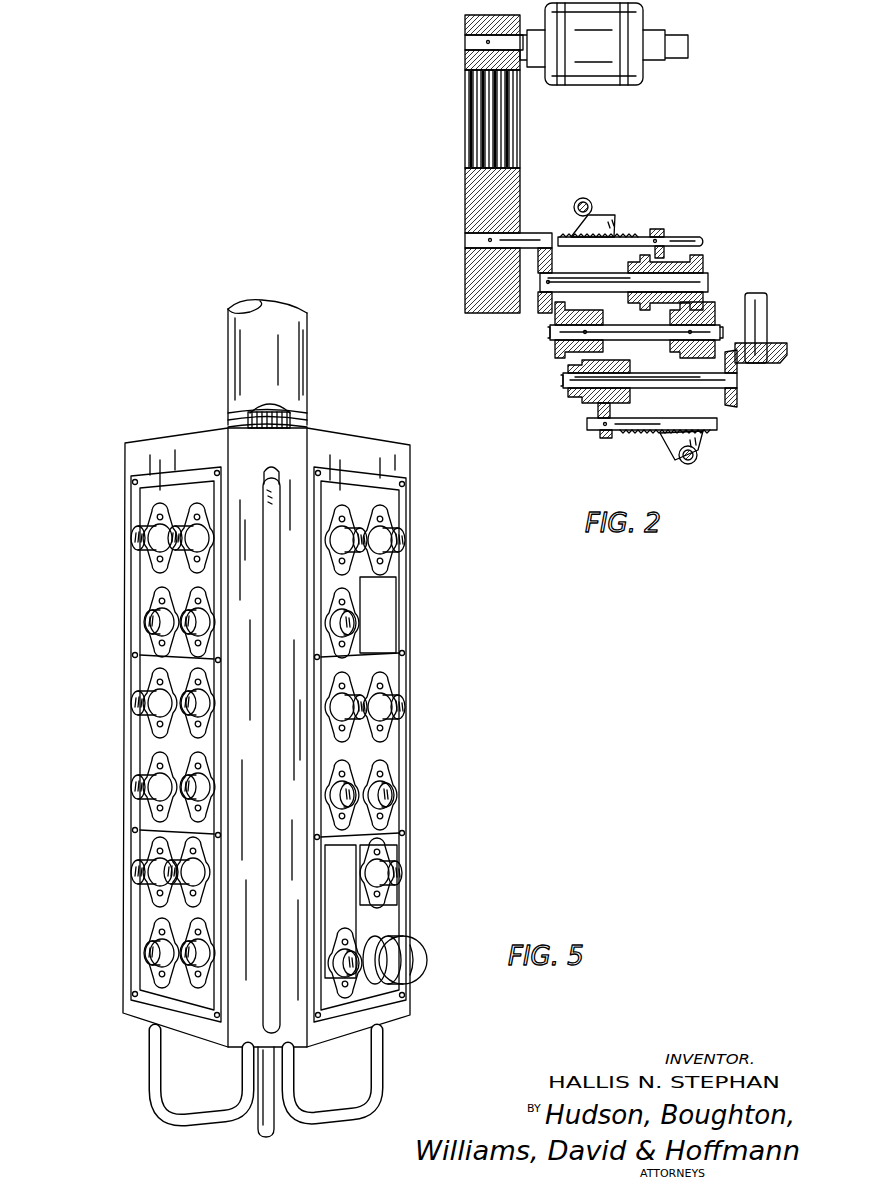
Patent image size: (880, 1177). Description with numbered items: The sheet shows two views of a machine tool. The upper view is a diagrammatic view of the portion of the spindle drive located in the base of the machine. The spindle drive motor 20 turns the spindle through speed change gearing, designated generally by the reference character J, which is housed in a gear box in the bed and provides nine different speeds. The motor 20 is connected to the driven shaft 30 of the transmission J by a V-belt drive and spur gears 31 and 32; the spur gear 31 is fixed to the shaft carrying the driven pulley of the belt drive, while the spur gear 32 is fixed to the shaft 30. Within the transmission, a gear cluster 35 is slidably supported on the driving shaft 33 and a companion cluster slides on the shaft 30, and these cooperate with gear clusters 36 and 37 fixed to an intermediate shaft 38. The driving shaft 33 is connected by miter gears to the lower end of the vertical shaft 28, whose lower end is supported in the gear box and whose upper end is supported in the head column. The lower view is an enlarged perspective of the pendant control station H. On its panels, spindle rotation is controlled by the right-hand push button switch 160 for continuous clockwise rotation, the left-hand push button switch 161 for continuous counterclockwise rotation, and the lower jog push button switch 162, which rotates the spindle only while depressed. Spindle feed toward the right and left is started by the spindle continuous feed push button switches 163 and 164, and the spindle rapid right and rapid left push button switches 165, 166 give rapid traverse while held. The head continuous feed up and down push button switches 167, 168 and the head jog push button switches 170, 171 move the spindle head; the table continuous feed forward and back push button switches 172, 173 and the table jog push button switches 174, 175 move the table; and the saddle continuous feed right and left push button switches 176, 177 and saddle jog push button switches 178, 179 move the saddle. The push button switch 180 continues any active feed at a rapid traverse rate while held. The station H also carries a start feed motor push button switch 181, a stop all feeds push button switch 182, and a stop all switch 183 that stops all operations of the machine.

In FIG. 2, the spindle drive motor 20 is at (603, 85).
In FIG. 2, the spur gear 31 is at (548, 232).
In FIG. 2, the speed change gearing J is at (683, 235).
In FIG. 2, the spur gear 32 is at (540, 318).
In FIG. 2, the driven shaft 30 is at (592, 268).
In FIG. 2, the gear cluster 35 is at (703, 266).
In FIG. 2, the intermediate shaft 38 is at (642, 341).
In FIG. 2, the gear cluster 37 is at (557, 346).
In FIG. 2, the gear cluster 36 is at (715, 310).
In FIG. 2, the driving shaft 33 is at (690, 393).
In FIG. 2, the vertical shaft 28 is at (757, 315).
In FIG. 5, the pendant control station H is at (412, 467).
In FIG. 5, the stop all switch 183 is at (272, 1137).
In FIG. 5, the push button switch 160 is at (399, 540).
In FIG. 5, the push button switch 161 is at (358, 548).
In FIG. 5, the jog push button switch 162 is at (352, 626).
In FIG. 5, the spindle continuous feed push button switch 163 is at (176, 542).
In FIG. 5, the spindle continuous feed push button switch 164 is at (132, 538).
In FIG. 5, the spindle rapid right push button switch 165 is at (188, 630).
In FIG. 5, the spindle rapid left push button switch 166 is at (145, 622).
In FIG. 5, the head continuous feed up push button switch 167 is at (134, 703).
In FIG. 5, the head continuous feed down push button switch 168 is at (132, 787).
In FIG. 5, the head jog push button switch 170 is at (188, 712).
In FIG. 5, the head jog push button switch 171 is at (188, 793).
In FIG. 5, the table continuous feed forward push button switch 172 is at (358, 715).
In FIG. 5, the table continuous feed back push button switch 173 is at (399, 707).
In FIG. 5, the table jog feed push button switch 174 is at (350, 802).
In FIG. 5, the table jog feed push button switch 175 is at (390, 795).
In FIG. 5, the saddle continuous feed right push button switch 176 is at (173, 882).
In FIG. 5, the saddle continuous feed left push button switch 177 is at (132, 872).
In FIG. 5, the saddle jog push button switch 178 is at (190, 963).
In FIG. 5, the saddle jog push button switch 179 is at (145, 953).
In FIG. 5, the rapid traverse push button switch 180 is at (352, 978).
In FIG. 5, the start feed motor push button switch 181 is at (397, 873).
In FIG. 5, the stop all feeds push button switch 182 is at (418, 952).